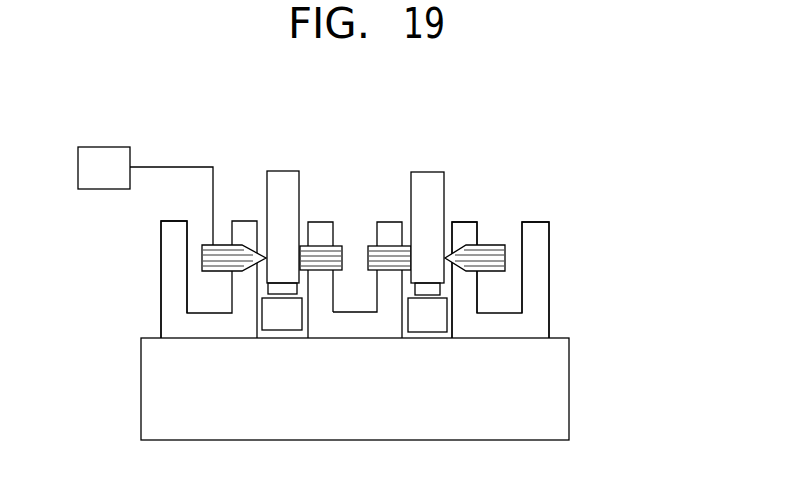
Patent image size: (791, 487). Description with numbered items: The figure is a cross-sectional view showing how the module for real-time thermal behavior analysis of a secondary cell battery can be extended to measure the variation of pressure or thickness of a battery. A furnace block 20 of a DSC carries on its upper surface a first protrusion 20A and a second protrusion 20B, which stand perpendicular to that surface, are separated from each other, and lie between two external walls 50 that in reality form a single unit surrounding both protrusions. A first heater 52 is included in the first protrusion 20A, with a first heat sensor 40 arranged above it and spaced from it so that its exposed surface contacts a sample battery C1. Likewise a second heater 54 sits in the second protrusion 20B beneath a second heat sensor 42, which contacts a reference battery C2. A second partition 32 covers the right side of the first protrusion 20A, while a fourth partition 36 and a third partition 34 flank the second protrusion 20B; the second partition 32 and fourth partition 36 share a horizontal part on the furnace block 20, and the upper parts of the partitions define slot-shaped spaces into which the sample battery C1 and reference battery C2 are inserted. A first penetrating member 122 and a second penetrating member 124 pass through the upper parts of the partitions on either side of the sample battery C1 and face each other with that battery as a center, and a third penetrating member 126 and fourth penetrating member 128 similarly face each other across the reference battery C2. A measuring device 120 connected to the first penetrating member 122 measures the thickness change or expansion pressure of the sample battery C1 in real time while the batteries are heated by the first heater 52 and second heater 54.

The furnace block 20 is at (554, 427).
The first protrusion 20A is at (255, 320).
The second protrusion 20B is at (453, 320).
The second partition 32 is at (320, 232).
The third partition 34 is at (465, 230).
The fourth partition 36 is at (385, 230).
The first heat sensor 40 is at (285, 288).
The second heat sensor 42 is at (428, 288).
The external wall 50 is at (175, 283).
The first heater 52 is at (273, 322).
The second heater 54 is at (428, 322).
The measuring device 120 is at (103, 158).
The first penetrating member 122 is at (210, 270).
The second penetrating member 124 is at (318, 268).
The third penetrating member 126 is at (493, 253).
The fourth penetrating member 128 is at (390, 268).
The sample battery C1 is at (282, 180).
The reference battery C2 is at (427, 178).